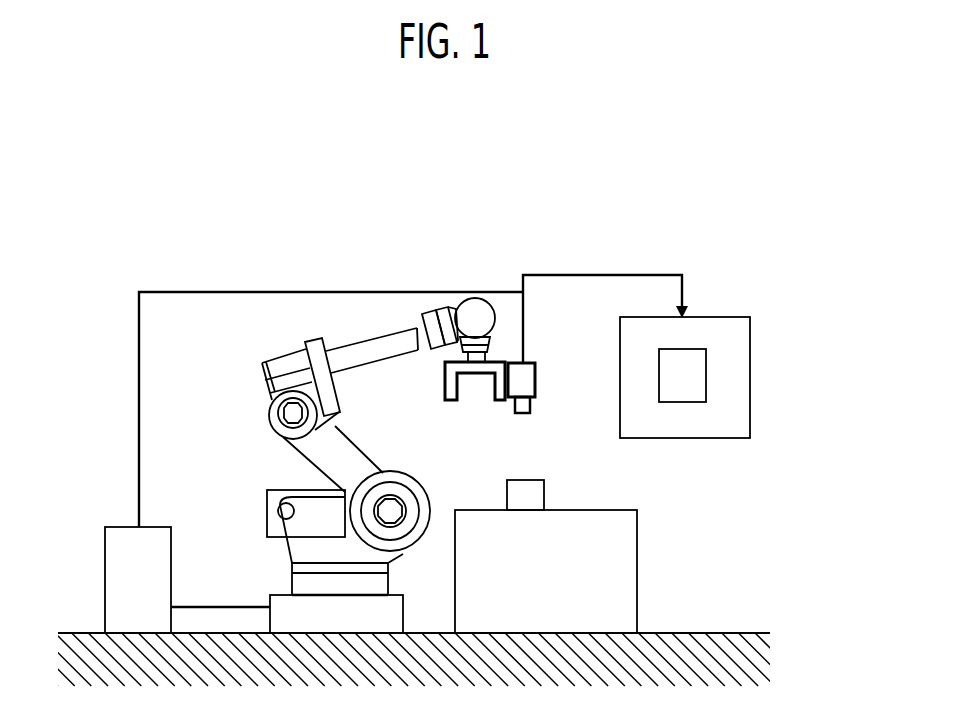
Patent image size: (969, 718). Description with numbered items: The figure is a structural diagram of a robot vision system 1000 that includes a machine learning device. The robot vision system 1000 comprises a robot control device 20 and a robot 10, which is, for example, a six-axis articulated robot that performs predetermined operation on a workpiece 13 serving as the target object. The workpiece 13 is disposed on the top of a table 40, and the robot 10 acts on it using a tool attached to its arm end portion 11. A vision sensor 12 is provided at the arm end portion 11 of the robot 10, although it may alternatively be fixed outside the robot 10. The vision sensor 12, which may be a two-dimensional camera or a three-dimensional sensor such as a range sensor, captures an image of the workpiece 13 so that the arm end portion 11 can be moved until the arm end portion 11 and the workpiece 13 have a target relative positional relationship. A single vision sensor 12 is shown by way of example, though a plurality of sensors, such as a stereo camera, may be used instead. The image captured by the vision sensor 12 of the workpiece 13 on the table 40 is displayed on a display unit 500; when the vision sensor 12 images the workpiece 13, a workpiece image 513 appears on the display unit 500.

The robot vision system 1000 is at (642, 202).
The robot 10 is at (267, 410).
The arm end portion 11 is at (449, 403).
The vision sensor 12 is at (536, 376).
The workpiece 13 is at (545, 497).
The robot control device 20 is at (105, 545).
The table 40 is at (600, 578).
The display unit 500 is at (750, 373).
The workpiece image 513 is at (686, 403).